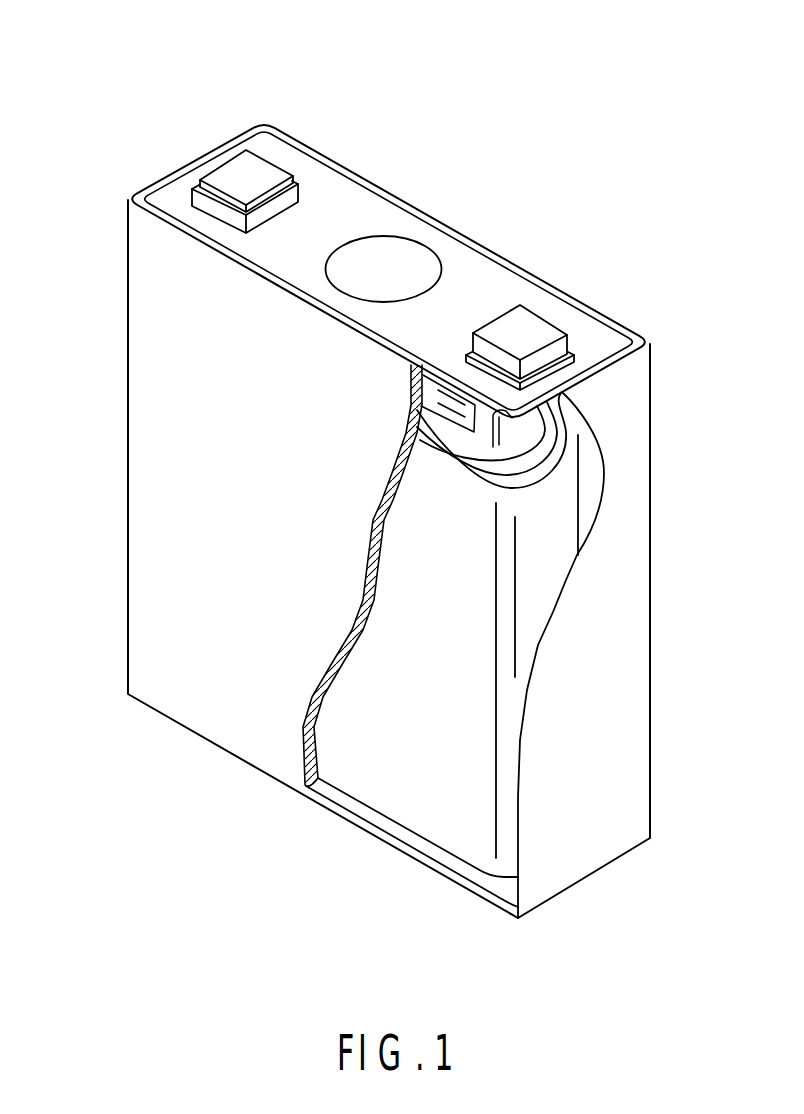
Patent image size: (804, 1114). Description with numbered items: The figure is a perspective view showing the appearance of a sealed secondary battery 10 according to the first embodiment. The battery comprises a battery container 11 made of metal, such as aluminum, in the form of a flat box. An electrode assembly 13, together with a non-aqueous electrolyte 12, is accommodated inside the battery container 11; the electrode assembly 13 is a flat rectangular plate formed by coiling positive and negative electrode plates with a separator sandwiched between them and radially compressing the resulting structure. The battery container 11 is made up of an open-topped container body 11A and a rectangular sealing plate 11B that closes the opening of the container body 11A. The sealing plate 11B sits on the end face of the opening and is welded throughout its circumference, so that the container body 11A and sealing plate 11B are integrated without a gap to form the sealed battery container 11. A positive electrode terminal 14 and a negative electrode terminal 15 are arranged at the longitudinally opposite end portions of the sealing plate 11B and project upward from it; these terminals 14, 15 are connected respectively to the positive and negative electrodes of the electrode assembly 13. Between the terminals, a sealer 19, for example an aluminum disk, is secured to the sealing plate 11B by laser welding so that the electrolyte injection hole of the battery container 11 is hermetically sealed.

The sealed secondary battery 10 is at (276, 75).
The battery container 11 is at (128, 406).
The container body 11A is at (144, 587).
The sealing plate 11B is at (498, 273).
The non-aqueous electrolyte 12 is at (596, 478).
The electrode assembly 13 is at (427, 810).
The positive electrode terminal 14 is at (235, 170).
The negative electrode terminal 15 is at (533, 325).
The sealer 19 is at (403, 252).